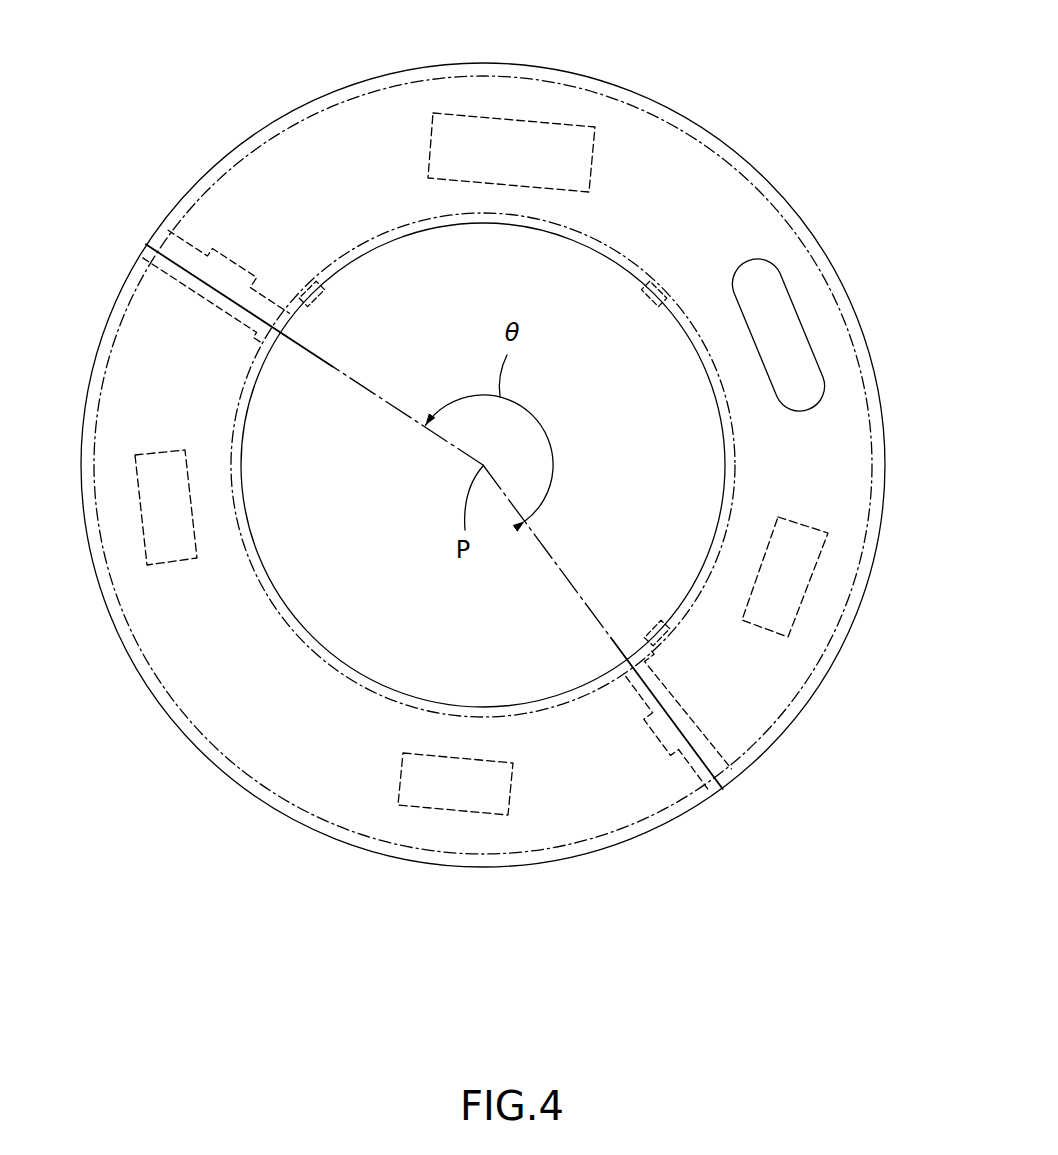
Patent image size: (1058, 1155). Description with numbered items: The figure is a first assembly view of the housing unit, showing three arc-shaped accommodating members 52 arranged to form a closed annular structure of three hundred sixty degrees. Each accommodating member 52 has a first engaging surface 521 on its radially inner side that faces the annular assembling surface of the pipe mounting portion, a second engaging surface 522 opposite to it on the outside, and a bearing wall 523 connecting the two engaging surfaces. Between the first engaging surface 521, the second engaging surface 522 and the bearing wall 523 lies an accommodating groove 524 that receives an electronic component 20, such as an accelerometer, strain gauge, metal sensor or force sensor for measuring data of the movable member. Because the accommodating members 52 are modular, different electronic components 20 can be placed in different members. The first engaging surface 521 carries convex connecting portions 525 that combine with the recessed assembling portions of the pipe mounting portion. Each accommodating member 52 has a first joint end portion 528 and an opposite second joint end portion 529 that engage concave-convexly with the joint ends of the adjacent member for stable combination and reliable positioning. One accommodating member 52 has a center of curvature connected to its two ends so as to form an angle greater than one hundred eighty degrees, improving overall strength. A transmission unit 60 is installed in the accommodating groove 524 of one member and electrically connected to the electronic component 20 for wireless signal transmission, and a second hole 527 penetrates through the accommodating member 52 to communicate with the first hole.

The accommodating member 52 is at (334, 82).
The electronic component 20 is at (521, 122).
The transmission unit 60 is at (797, 597).
The first engaging surface 521 is at (725, 482).
The second engaging surface 522 is at (665, 107).
The bearing wall 523 is at (730, 192).
The accommodating groove 524 is at (813, 253).
The connecting portion 525 is at (308, 312).
The second hole 527 is at (815, 357).
The first joint end portion 528 is at (148, 240).
The second joint end portion 529 is at (733, 797).